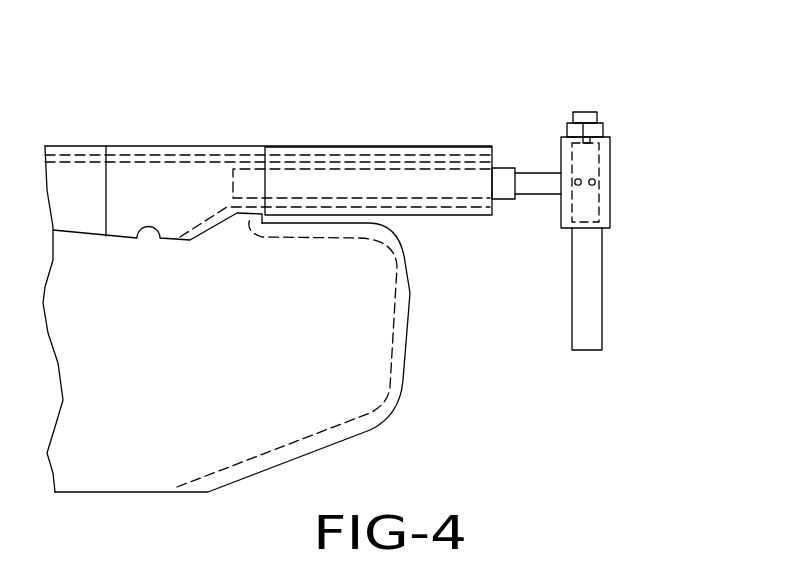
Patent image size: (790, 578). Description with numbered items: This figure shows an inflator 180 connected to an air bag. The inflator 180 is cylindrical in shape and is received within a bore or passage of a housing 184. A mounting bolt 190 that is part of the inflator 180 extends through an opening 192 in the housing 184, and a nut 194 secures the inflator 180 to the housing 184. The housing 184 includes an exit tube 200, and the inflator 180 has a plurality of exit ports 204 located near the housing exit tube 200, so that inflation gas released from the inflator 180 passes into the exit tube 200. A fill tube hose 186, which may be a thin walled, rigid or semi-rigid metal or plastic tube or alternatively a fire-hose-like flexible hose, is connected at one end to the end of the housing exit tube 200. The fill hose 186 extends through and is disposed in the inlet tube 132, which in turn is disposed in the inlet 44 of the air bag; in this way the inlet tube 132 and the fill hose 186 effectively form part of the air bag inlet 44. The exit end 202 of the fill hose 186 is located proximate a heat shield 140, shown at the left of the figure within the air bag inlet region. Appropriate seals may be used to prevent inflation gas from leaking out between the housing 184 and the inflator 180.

The inlet 44 is at (462, 214).
The inlet tube 132 is at (425, 165).
The heat shield 140 is at (155, 190).
The inflator 180 is at (590, 302).
The housing 184 is at (590, 160).
The fill tube hose 186 is at (511, 167).
The mounting bolt 190 is at (582, 112).
The opening 192 is at (600, 142).
The nut 194 is at (603, 130).
The exit tube 200 is at (538, 187).
The exit end 202 is at (233, 187).
The exit ports 204 is at (580, 186).